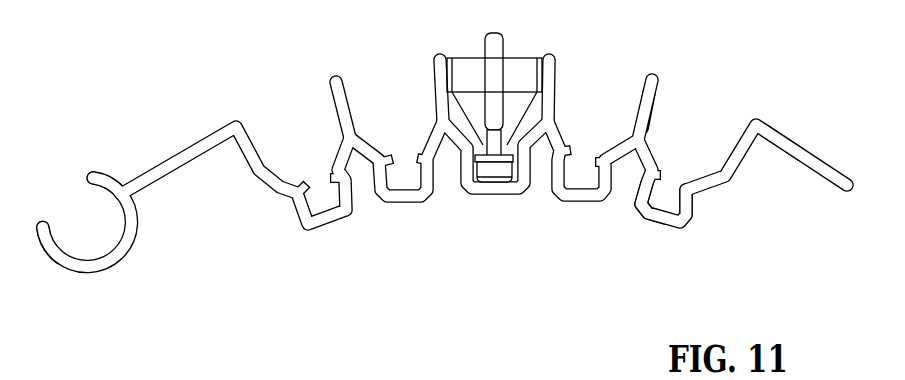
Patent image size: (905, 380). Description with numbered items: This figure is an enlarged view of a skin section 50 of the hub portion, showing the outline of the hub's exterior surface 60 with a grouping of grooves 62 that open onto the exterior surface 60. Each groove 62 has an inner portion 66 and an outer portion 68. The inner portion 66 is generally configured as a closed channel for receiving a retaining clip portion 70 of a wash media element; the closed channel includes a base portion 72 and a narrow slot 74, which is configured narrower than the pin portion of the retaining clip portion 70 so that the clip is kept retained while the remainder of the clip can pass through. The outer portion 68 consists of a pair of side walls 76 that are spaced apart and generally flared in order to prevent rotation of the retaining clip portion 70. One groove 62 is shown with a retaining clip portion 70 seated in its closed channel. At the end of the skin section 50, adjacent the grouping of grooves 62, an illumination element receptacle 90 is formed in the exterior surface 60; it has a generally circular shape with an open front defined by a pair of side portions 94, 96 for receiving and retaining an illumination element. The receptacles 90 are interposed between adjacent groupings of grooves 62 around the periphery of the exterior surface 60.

The clip profile 50 is at (211, 102).
The exterior surface 60 is at (175, 148).
The grooves 62 is at (392, 87).
The inner portion 66 is at (665, 203).
The outer portion 68 is at (726, 104).
The retaining clip portion 70 is at (498, 177).
The base portion 72 is at (655, 212).
The narrow slot 74 is at (700, 195).
The side walls 76 is at (657, 103).
The illumination element receptacles 90 is at (112, 260).
The side portion 94 is at (84, 182).
The side portion 96 is at (55, 217).